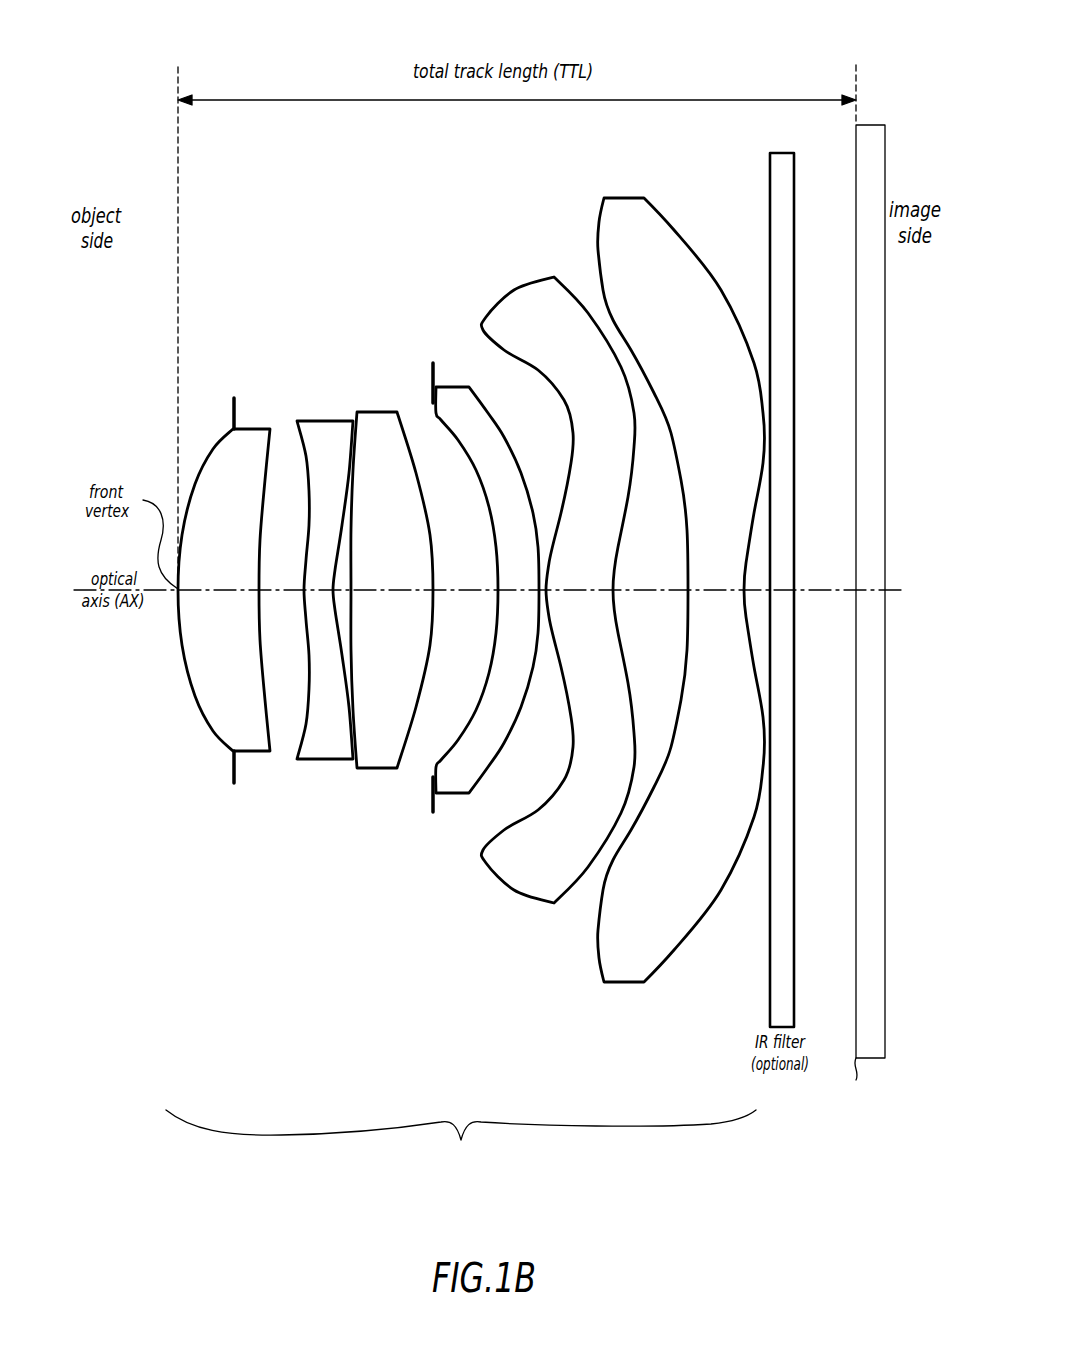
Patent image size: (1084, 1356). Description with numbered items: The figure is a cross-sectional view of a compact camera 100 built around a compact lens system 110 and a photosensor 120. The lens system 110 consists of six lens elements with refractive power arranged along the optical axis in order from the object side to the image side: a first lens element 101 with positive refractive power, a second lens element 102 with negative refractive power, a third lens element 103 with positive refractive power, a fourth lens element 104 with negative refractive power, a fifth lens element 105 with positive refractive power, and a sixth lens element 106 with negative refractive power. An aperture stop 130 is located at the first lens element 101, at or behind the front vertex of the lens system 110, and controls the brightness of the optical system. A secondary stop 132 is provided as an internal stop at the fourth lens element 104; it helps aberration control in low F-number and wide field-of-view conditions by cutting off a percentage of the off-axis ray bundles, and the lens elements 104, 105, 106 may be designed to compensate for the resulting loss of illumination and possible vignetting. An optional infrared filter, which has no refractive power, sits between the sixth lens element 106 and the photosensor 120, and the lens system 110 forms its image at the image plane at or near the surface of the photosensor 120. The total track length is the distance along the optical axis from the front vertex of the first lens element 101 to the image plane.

The camera 100 is at (148, 66).
The first lens element 101 is at (255, 752).
The second lens element 102 is at (315, 760).
The third lens element 103 is at (370, 769).
The fourth lens element 104 is at (447, 794).
The fifth lens element 105 is at (527, 897).
The sixth lens element 106 is at (620, 983).
The lens system 110 is at (461, 1141).
The photosensor 120 is at (868, 1060).
The aperture stop 130 is at (233, 398).
The secondary stop 132 is at (431, 363).